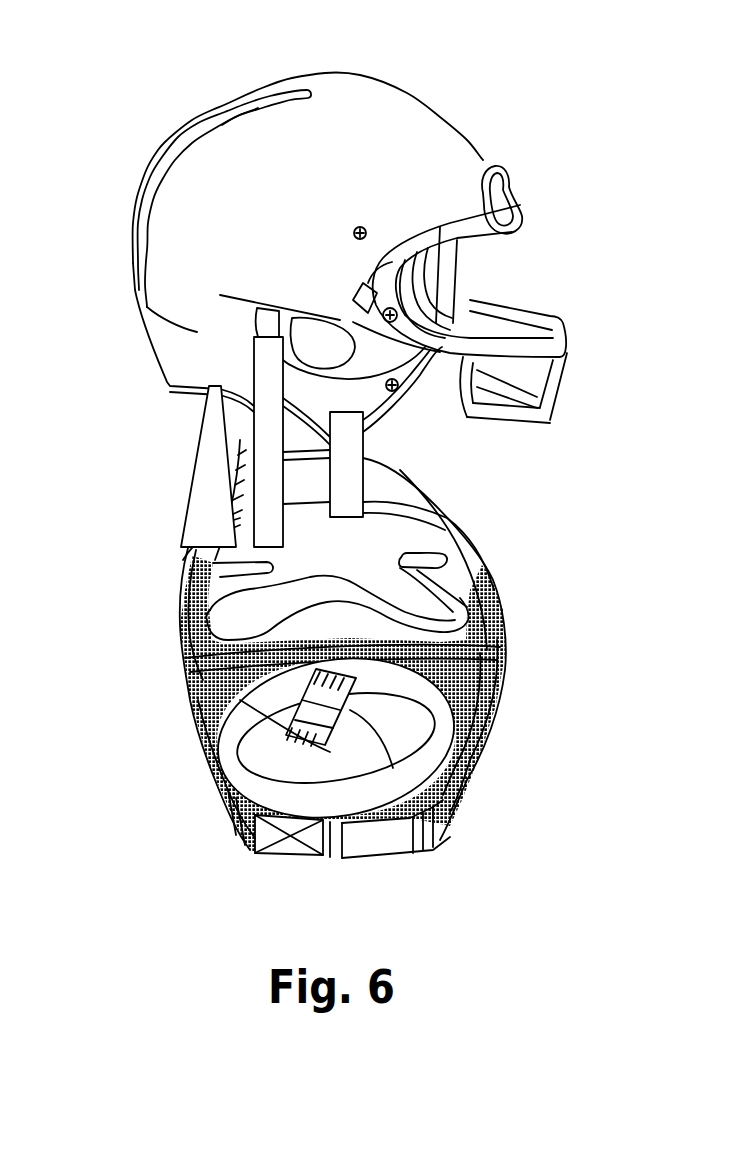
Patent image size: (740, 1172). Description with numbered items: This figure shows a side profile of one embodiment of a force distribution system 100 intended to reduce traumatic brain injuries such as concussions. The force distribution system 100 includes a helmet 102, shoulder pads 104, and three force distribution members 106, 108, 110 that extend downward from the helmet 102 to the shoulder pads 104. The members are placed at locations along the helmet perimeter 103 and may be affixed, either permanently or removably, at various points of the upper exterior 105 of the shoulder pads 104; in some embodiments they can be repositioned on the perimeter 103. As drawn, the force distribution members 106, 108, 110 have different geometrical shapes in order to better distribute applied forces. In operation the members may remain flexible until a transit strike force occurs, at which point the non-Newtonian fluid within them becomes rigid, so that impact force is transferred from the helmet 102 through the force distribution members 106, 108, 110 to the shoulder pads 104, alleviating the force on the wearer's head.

The force distribution system 100 is at (116, 78).
The helmet 102 is at (480, 160).
The helmet perimeter 103 is at (157, 248).
The shoulder pads 104 is at (497, 592).
The upper exterior of shoulder pads 105 is at (295, 668).
The force distribution member 106 is at (197, 460).
The force distribution member 108 is at (365, 468).
The force distribution member 110 is at (268, 568).